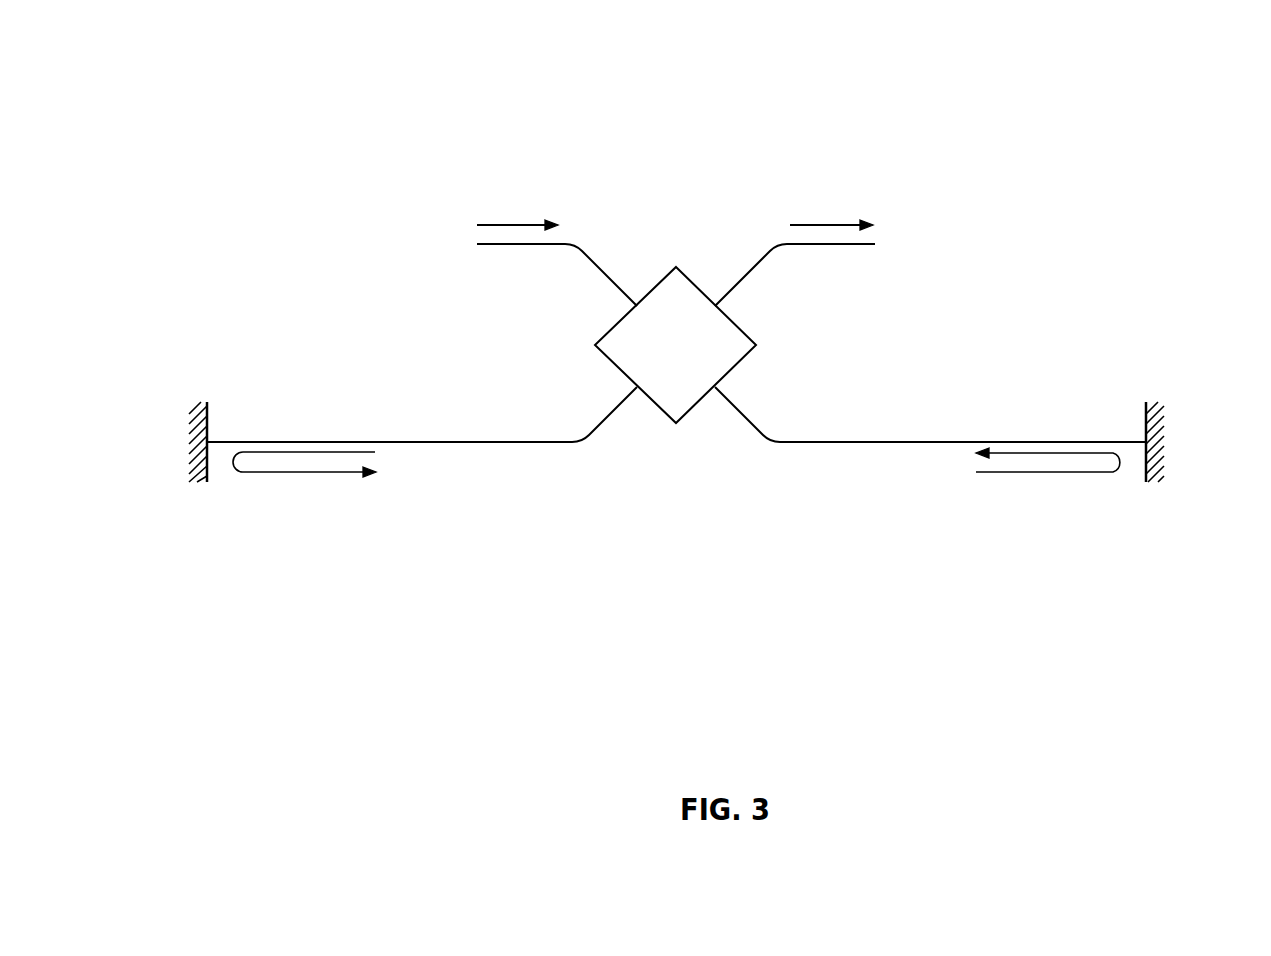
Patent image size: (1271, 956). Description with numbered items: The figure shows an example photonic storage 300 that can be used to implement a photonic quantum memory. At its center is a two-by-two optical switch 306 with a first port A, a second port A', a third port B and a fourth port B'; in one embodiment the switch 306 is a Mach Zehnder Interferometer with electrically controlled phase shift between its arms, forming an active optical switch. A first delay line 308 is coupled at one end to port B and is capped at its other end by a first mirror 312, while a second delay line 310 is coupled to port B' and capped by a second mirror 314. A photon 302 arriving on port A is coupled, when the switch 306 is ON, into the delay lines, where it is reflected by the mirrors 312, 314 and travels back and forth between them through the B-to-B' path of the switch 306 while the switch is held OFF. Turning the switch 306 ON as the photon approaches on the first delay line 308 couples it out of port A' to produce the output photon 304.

The photonic storage 300 is at (1269, 71).
The photon 302 is at (499, 247).
The photon 304 is at (835, 247).
The 2×2 optical switch 306 is at (658, 280).
The first delay line 308 is at (427, 442).
The second delay line 310 is at (837, 441).
The first mirror 312 is at (208, 418).
The second mirror 314 is at (1146, 416).